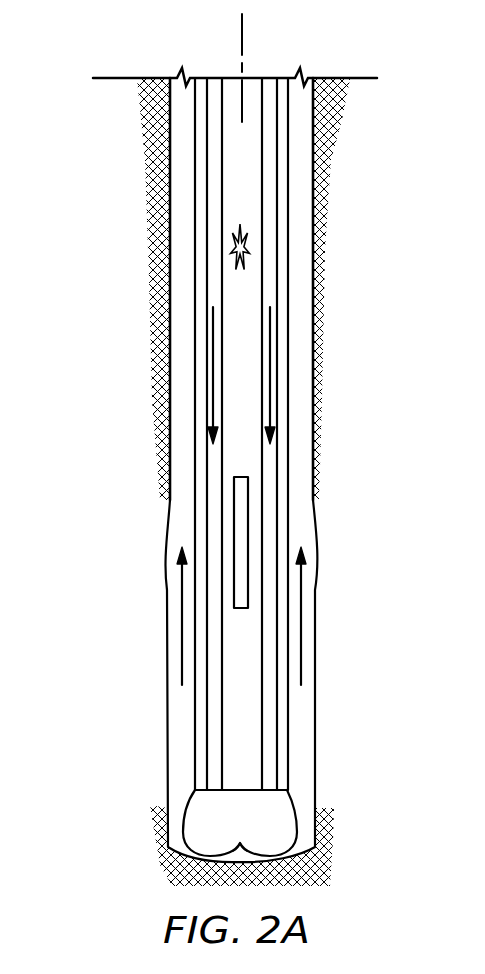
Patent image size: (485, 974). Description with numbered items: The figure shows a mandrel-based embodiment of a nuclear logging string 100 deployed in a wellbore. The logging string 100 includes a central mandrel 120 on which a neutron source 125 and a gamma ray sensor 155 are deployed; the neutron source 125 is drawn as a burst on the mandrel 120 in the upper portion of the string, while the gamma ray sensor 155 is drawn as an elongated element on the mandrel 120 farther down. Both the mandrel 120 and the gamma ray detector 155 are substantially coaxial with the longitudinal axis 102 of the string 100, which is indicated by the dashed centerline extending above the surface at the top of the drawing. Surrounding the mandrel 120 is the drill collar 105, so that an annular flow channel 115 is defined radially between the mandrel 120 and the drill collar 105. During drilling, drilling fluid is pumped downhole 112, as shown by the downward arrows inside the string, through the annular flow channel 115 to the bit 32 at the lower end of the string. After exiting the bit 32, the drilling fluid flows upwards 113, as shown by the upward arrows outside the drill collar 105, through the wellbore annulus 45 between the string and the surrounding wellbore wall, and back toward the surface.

The nuclear logging string 100 is at (121, 186).
The longitudinal axis 102 is at (240, 46).
The wellbore annulus 45 is at (302, 232).
The drill collar 105 is at (195, 718).
The central mandrel 120 is at (247, 166).
The neutron source 125 is at (231, 248).
The downhole pumping of drilling fluid 112 is at (268, 384).
The gamma ray sensor 155 is at (238, 522).
The annular flow channel 115 is at (212, 613).
The upward flow of drilling fluid 113 is at (300, 620).
The bit 32 is at (256, 832).